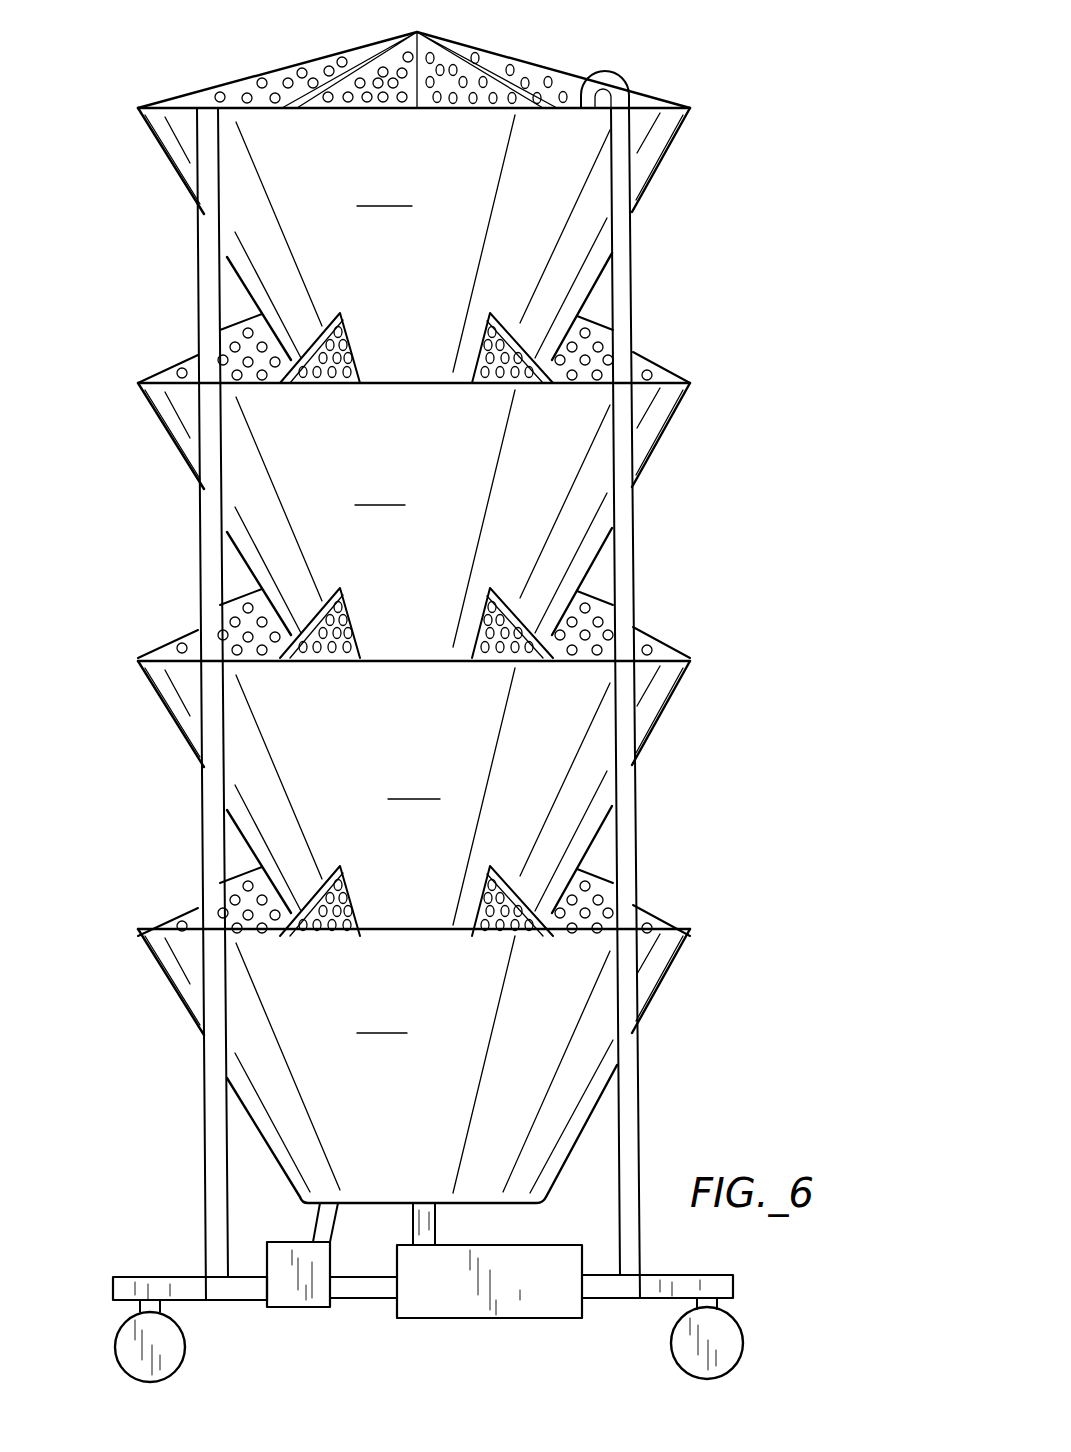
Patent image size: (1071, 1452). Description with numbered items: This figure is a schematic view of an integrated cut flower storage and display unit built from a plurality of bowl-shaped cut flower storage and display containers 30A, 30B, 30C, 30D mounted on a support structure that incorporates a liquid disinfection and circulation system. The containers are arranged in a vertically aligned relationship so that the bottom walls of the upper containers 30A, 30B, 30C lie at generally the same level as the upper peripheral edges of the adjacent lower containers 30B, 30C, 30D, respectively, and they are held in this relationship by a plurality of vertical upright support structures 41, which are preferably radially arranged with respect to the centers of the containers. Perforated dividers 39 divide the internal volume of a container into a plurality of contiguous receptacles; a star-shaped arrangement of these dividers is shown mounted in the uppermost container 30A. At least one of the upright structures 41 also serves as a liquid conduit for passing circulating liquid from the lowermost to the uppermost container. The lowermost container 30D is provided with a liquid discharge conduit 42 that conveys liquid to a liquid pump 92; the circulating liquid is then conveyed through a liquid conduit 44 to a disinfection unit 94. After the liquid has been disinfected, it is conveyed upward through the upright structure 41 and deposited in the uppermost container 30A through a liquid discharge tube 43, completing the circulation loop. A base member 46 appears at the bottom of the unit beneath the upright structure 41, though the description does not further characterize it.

The perforated dividers 39 is at (497, 58).
The liquid discharge tube 43 is at (610, 75).
The vertical upright support structures 41 is at (207, 312).
The bowl-shaped container 30A is at (414, 245).
The bowl-shaped container 30B is at (414, 520).
The bowl-shaped container 30C is at (414, 798).
The bowl-shaped container 30D is at (414, 1066).
The liquid discharge conduit 42 is at (333, 1222).
The liquid pump 92 is at (297, 1304).
The liquid conduit 44 is at (370, 1290).
The disinfection unit 94 is at (517, 1306).
The base member 46 is at (600, 1300).